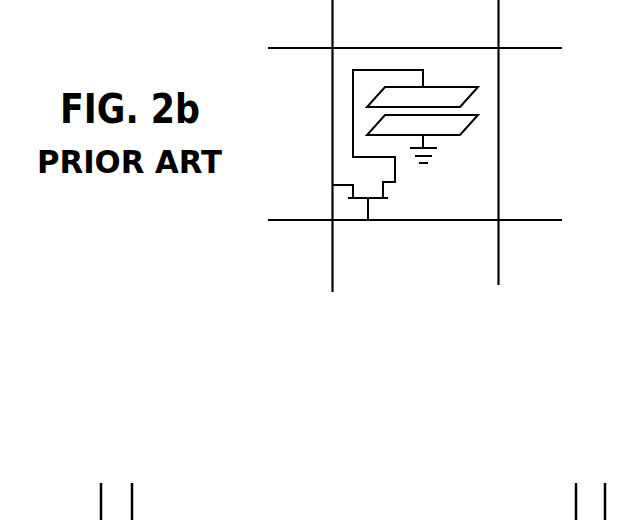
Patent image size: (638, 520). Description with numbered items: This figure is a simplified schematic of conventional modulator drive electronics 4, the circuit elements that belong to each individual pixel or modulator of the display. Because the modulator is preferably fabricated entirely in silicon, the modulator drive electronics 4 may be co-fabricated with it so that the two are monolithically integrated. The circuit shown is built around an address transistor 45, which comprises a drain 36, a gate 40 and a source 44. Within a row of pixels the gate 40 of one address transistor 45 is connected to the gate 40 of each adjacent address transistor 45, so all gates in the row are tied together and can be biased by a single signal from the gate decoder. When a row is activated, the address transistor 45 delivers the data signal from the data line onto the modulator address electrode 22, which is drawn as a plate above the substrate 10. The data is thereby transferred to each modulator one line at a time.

The modulator drive electronics 4 is at (427, 291).
The substrate 10 is at (466, 115).
The modulator address electrode 22 is at (453, 97).
The drain 36 is at (340, 184).
The gate 40 is at (368, 212).
The source 44 is at (394, 182).
The address transistor 45 is at (410, 207).